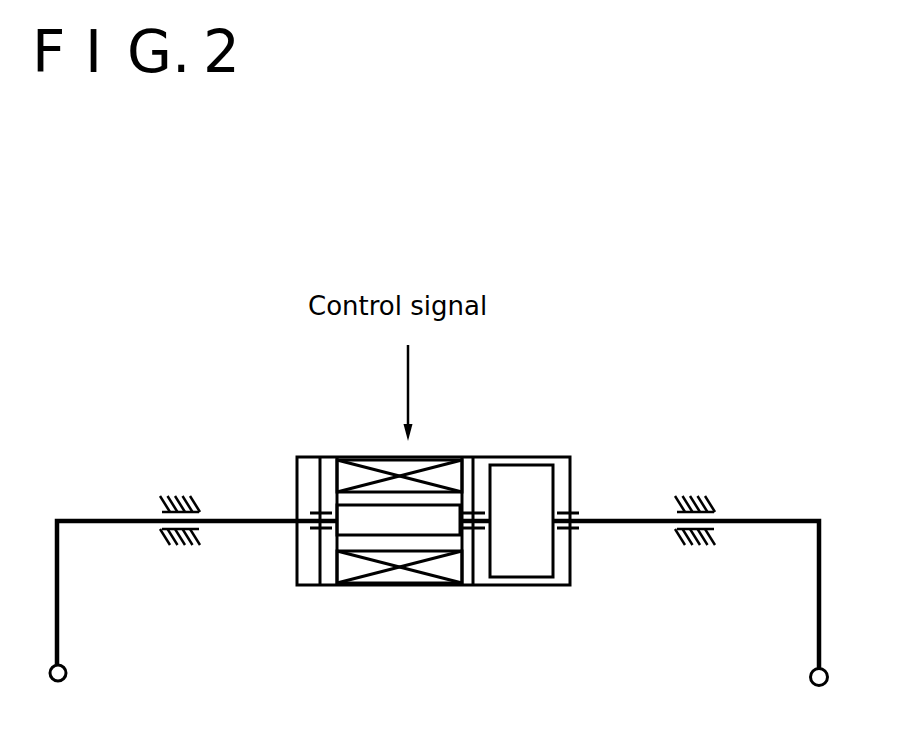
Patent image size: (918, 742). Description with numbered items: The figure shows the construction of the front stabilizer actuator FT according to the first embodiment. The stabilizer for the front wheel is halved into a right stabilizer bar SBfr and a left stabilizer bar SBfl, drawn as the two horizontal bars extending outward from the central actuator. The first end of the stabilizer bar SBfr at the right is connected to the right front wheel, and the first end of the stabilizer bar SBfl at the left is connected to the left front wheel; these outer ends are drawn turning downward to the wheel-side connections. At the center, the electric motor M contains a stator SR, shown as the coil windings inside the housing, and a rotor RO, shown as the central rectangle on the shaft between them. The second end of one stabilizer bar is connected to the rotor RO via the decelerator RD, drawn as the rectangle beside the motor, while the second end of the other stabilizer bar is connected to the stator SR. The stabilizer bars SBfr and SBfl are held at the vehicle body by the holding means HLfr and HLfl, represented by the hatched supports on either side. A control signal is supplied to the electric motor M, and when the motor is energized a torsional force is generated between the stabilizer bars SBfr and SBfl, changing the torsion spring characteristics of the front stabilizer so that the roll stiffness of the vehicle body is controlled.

The electric motor M is at (345, 588).
The stabilizer actuator FT is at (528, 457).
The stator SR is at (348, 457).
The rotor RO is at (461, 505).
The decelerator RD is at (528, 577).
The stabilizer bar SBfl is at (93, 523).
The stabilizer bar SBfr is at (610, 523).
The holding means HLfl is at (181, 506).
The holding means HLfr is at (696, 506).